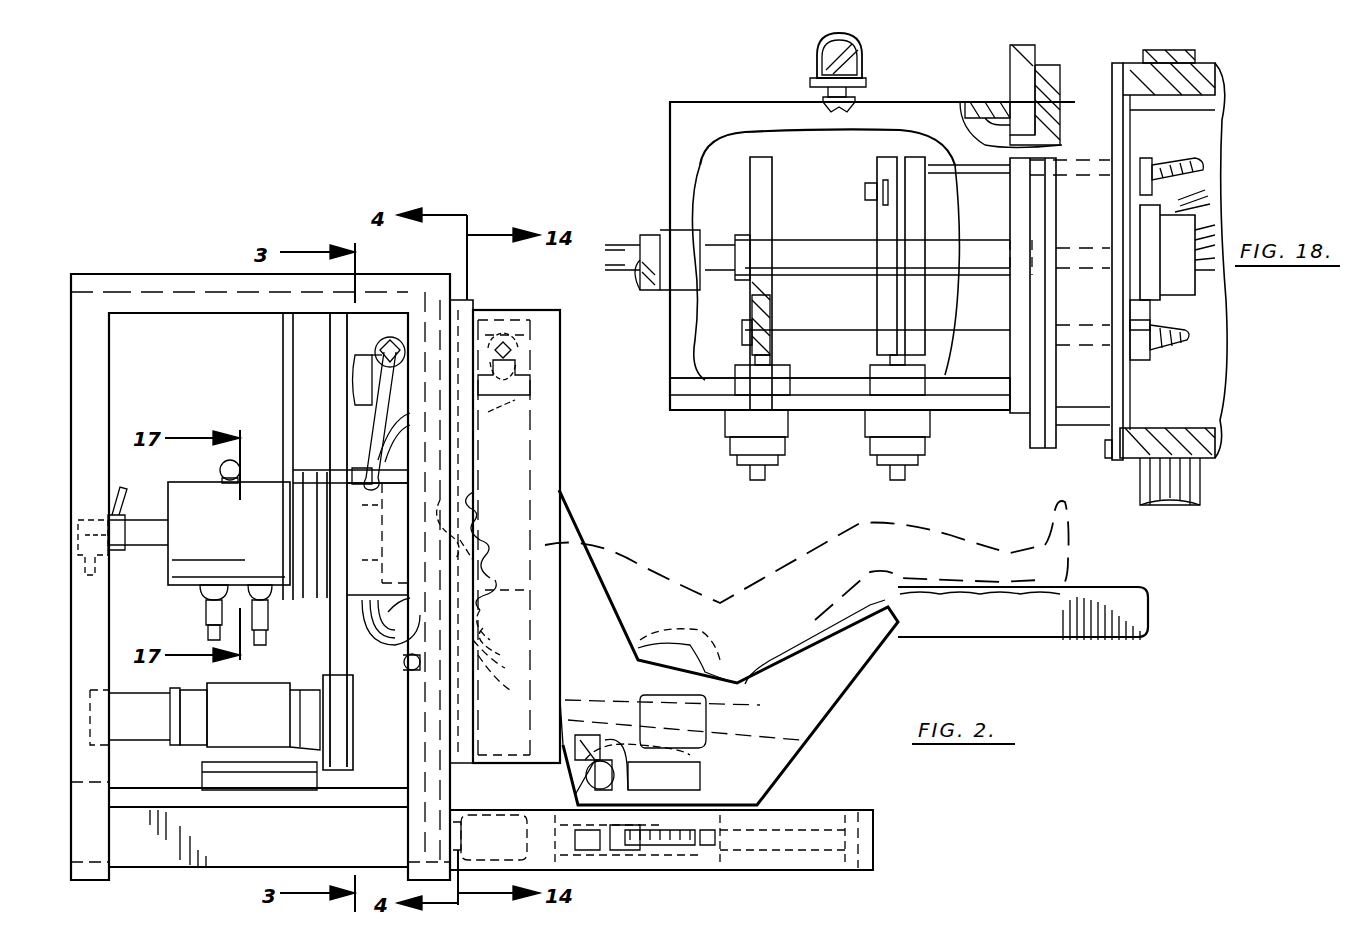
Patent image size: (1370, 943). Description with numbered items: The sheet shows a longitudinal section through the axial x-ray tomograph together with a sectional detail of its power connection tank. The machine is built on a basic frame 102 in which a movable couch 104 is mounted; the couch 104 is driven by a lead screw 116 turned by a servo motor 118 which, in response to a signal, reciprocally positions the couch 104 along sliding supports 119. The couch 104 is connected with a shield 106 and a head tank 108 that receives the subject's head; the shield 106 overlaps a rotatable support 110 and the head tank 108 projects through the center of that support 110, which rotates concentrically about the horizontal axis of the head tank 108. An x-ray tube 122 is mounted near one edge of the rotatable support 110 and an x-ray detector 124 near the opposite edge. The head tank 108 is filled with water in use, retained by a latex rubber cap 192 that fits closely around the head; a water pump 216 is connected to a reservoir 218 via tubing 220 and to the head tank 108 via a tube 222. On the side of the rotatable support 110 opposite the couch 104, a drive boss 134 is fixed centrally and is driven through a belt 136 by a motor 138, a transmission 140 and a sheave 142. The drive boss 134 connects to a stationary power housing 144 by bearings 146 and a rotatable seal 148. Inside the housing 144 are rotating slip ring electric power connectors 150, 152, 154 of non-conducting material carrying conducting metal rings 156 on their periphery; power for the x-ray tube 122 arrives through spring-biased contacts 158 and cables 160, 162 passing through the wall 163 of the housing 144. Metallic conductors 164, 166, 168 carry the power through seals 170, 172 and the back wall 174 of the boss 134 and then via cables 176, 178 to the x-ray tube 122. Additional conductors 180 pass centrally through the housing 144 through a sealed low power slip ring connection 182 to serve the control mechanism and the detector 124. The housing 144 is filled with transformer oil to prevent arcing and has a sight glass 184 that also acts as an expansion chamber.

In FIG. 2, the frame 102 is at (168, 270).
In FIG. 2, the couch 104 is at (995, 632).
In FIG. 2, the shield 106 is at (555, 300).
In FIG. 2, the head tank 108 is at (370, 575).
In FIG. 2, the rotatable support 110 is at (462, 320).
In FIG. 2, the lead screw 116 is at (688, 852).
In FIG. 2, the servo motor 118 is at (498, 815).
In FIG. 2, the sliding supports 119 is at (785, 856).
In FIG. 2, the x-ray tube 122 is at (352, 370).
In FIG. 2, the x-ray detector 124 is at (405, 678).
In FIG. 2, the drive boss 134 is at (362, 470).
In FIG. 18, the drive boss 134 is at (1225, 80).
In FIG. 2, the belt 136 is at (330, 658).
In FIG. 18, the belt 136 is at (1162, 500).
In FIG. 2, the motor 138 is at (130, 735).
In FIG. 2, the transmission 140 is at (215, 752).
In FIG. 2, the sheave 142 is at (345, 748).
In FIG. 2, the power housing 144 is at (178, 560).
In FIG. 18, the power housing 144 is at (735, 105).
In FIG. 18, the bearings 146 is at (1000, 102).
In FIG. 18, the rotatable seal 148 is at (1052, 100).
In FIG. 18, the slip ring electric power connector 150 is at (935, 225).
In FIG. 18, the slip ring electric power connector 152 is at (877, 205).
In FIG. 18, the slip ring electric power connector 154 is at (778, 182).
In FIG. 18, the conducting metal rings 156 is at (740, 368).
In FIG. 18, the spring-biased contacts 158 is at (770, 364).
In FIG. 18, the cable 160 is at (750, 480).
In FIG. 2, the cable 162 is at (268, 640).
In FIG. 18, the cable 162 is at (890, 480).
In FIG. 2, the wall 163 is at (205, 606).
In FIG. 18, the wall 163 is at (828, 414).
In FIG. 18, the metallic conductor 164 is at (810, 330).
In FIG. 2, the metallic conductor 166 is at (205, 618).
In FIG. 18, the metallic conductor 166 is at (863, 190).
In FIG. 18, the metallic conductor 168 is at (962, 120).
In FIG. 18, the seal 170 is at (1082, 360).
In FIG. 18, the seal 172 is at (1088, 205).
In FIG. 18, the back wall 174 is at (1135, 140).
In FIG. 2, the cable 176 is at (385, 383).
In FIG. 18, the cable 176 is at (1203, 176).
In FIG. 2, the cable 178 is at (368, 435).
In FIG. 18, the cable 178 is at (1170, 350).
In FIG. 2, the conductors 180 is at (372, 640).
In FIG. 18, the conductors 180 is at (615, 242).
In FIG. 2, the sealed low power slip ring connection 182 is at (128, 512).
In FIG. 2, the sight glass 184 is at (220, 472).
In FIG. 18, the sight glass 184 is at (853, 58).
In FIG. 2, the latex rubber cap 192 is at (470, 505).
In FIG. 2, the water pump 216 is at (588, 768).
In FIG. 2, the reservoir 218 is at (712, 738).
In FIG. 2, the tubing 220 is at (660, 767).
In FIG. 2, the tube 222 is at (510, 695).